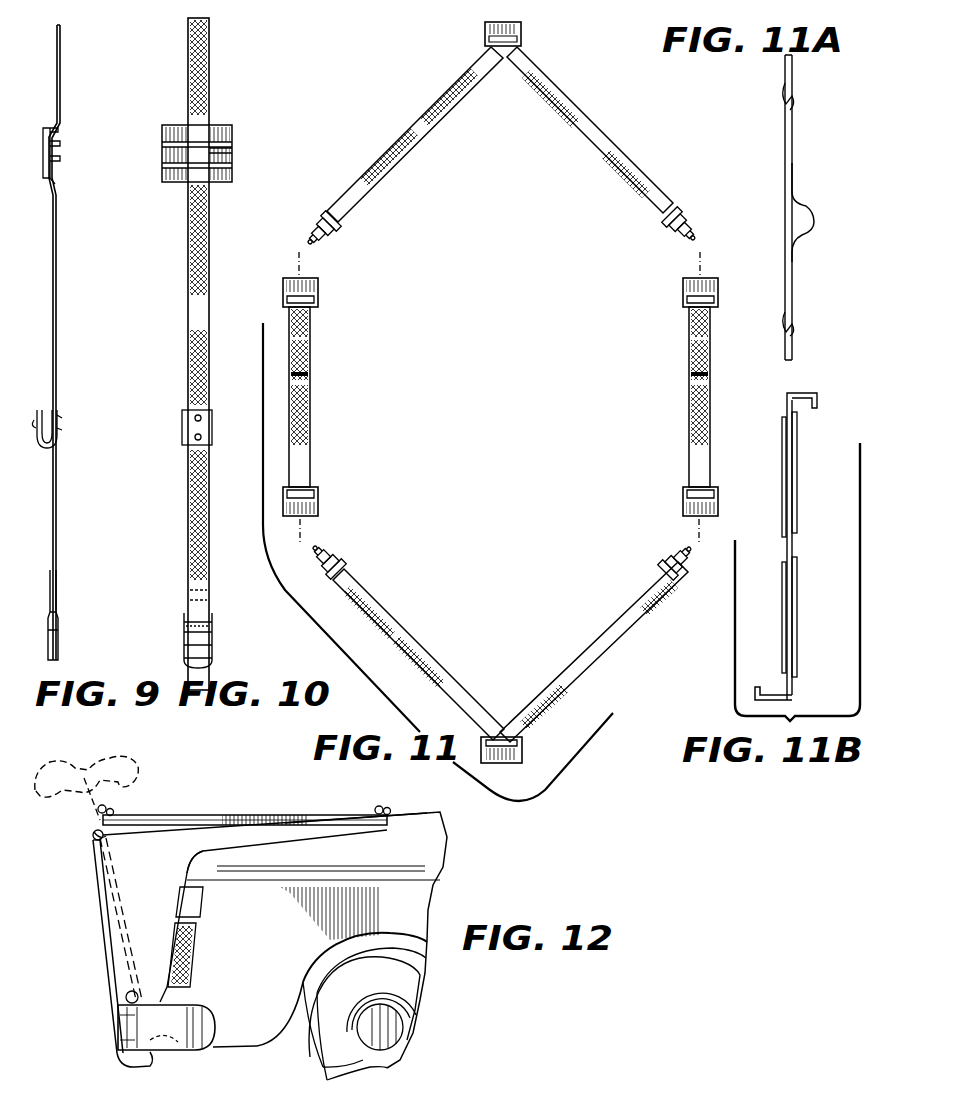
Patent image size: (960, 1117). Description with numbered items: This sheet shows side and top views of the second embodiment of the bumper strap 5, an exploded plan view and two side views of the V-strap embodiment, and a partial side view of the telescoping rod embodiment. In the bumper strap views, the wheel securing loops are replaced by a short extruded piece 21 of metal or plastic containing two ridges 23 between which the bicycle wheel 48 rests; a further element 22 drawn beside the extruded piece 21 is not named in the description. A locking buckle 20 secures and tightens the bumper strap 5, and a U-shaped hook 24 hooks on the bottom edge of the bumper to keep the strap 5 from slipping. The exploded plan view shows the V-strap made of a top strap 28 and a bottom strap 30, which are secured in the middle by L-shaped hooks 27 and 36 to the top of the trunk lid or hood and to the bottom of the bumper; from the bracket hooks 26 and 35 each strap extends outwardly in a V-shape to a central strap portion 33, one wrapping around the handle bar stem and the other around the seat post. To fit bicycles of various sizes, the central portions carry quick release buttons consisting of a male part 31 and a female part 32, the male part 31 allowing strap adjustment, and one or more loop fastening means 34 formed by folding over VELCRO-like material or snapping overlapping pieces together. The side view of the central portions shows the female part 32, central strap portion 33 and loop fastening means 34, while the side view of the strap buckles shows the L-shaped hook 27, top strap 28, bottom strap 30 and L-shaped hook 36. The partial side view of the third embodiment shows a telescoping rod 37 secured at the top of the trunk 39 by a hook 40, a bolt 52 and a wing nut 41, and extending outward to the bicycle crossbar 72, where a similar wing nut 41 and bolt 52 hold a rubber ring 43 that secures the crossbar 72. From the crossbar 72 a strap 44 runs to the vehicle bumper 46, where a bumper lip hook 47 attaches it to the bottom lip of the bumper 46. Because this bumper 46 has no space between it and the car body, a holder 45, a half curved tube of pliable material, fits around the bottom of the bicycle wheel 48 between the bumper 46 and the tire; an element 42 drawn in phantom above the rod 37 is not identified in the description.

In FIG. 9, the bumper strap 5 is at (60, 270).
In FIG. 9, the locking buckle 20 is at (60, 638).
In FIG. 10, the locking buckle 20 is at (214, 628).
In FIG. 9, the short extruded piece 21 is at (63, 128).
In FIG. 10, the short extruded piece 21 is at (216, 118).
In FIG. 9, the clip 22 is at (59, 170).
In FIG. 10, the clip 22 is at (168, 156).
In FIG. 9, the ridge 23 is at (60, 138).
In FIG. 10, the ridge 23 is at (232, 150).
In FIG. 9, the U-shaped hook 24 is at (48, 440).
In FIG. 10, the U-shaped hook 24 is at (212, 442).
In FIG. 11, the bracket hook 26 is at (480, 31).
In FIG. 11B, the L-shaped hook 27 is at (812, 392).
In FIG. 11, the top strap 28 is at (580, 115).
In FIG. 11B, the top strap 28 is at (798, 478).
In FIG. 11, the bottom strap 30 is at (586, 652).
In FIG. 11B, the bottom strap 30 is at (800, 610).
In FIG. 11, the male part of quick release button 31 is at (340, 230).
In FIG. 11, the female part of quick release button 32 is at (318, 282).
In FIG. 11A, the female part of quick release button 32 is at (796, 70).
In FIG. 11, the central strap portion 33 is at (310, 438).
In FIG. 11A, the central strap portion 33 is at (792, 270).
In FIG. 11, the loop fastening means 34 is at (310, 356).
In FIG. 11A, the loop fastening means 34 is at (800, 200).
In FIG. 11, the bracket hook 35 is at (528, 752).
In FIG. 11B, the L-shaped hook 36 is at (800, 695).
In FIG. 12, the telescoping rod 37 is at (328, 803).
In FIG. 12, the trunk 39 is at (198, 852).
In FIG. 12, the hook 40 is at (390, 830).
In FIG. 12, the wing nut 41 is at (108, 806).
In FIG. 12, the load (phantom) 42 is at (78, 754).
In FIG. 12, the inner rubber ring 43 is at (92, 832).
In FIG. 12, the strap 44 is at (180, 820).
In FIG. 12, the holder 45 is at (125, 998).
In FIG. 12, the vehicle bumper 46 is at (116, 1040).
In FIG. 12, the bumper lip hook 47 is at (183, 1040).
In FIG. 12, the bicycle wheel 48 is at (124, 915).
In FIG. 12, the bolt 52 is at (114, 812).
In FIG. 12, the bicycle crossbar 72 is at (104, 840).